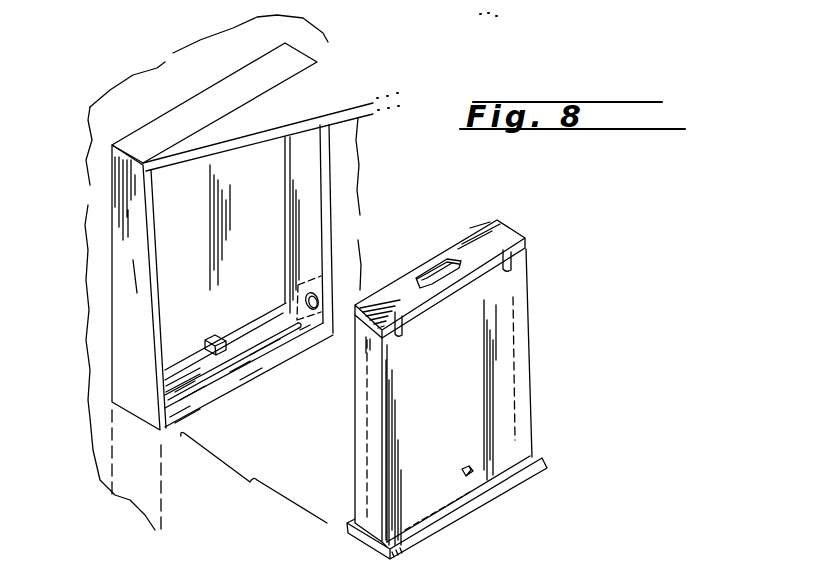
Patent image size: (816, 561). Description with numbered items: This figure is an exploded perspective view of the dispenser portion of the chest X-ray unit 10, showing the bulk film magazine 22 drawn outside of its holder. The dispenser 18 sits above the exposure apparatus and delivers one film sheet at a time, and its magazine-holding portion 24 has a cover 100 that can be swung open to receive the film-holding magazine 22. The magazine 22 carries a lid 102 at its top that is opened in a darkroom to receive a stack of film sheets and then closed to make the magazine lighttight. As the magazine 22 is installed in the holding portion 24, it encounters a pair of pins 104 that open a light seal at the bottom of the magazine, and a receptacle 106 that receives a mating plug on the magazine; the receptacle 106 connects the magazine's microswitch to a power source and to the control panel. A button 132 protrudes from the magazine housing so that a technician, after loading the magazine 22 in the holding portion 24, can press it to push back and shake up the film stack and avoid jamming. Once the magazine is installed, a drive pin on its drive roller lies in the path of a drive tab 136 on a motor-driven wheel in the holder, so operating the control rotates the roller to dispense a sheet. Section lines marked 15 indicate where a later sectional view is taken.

The chest X-ray unit 10 is at (459, 222).
The section line 15- 15 is at (372, 233).
The dispenser 18 is at (106, 284).
The bulk film magazine 22 is at (536, 340).
The magazine-holding portion 24 is at (306, 158).
The cover 100 is at (205, 133).
The lid 102 is at (525, 239).
The pins 104 is at (175, 382).
The receptacle 106 is at (223, 350).
The button 132 is at (472, 473).
The drive tab 136 is at (313, 310).